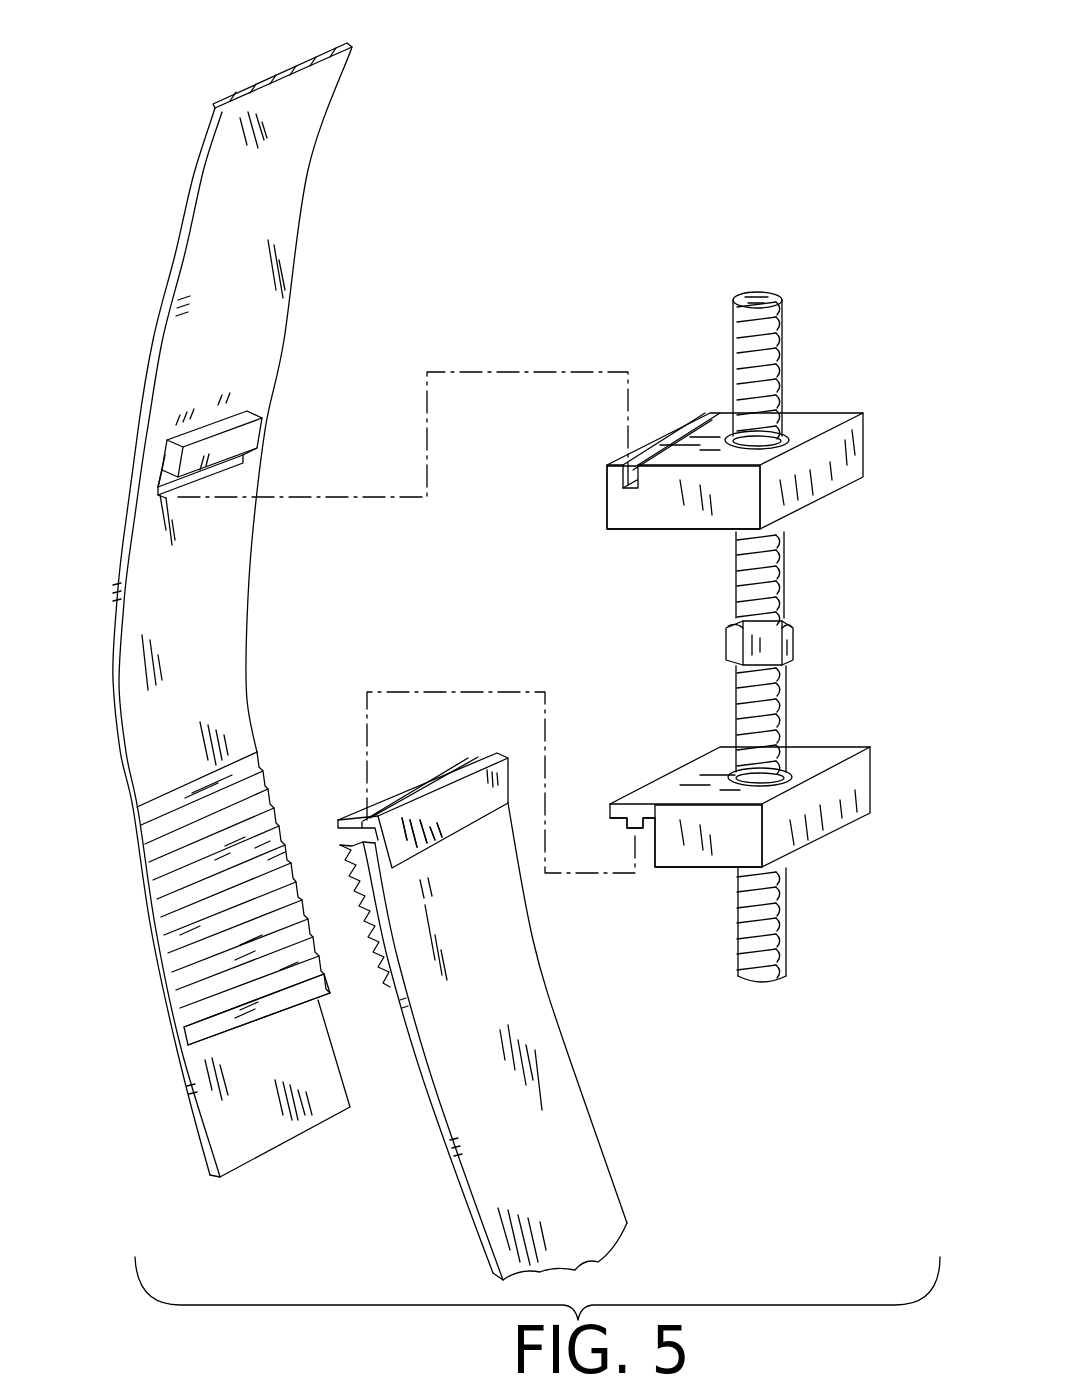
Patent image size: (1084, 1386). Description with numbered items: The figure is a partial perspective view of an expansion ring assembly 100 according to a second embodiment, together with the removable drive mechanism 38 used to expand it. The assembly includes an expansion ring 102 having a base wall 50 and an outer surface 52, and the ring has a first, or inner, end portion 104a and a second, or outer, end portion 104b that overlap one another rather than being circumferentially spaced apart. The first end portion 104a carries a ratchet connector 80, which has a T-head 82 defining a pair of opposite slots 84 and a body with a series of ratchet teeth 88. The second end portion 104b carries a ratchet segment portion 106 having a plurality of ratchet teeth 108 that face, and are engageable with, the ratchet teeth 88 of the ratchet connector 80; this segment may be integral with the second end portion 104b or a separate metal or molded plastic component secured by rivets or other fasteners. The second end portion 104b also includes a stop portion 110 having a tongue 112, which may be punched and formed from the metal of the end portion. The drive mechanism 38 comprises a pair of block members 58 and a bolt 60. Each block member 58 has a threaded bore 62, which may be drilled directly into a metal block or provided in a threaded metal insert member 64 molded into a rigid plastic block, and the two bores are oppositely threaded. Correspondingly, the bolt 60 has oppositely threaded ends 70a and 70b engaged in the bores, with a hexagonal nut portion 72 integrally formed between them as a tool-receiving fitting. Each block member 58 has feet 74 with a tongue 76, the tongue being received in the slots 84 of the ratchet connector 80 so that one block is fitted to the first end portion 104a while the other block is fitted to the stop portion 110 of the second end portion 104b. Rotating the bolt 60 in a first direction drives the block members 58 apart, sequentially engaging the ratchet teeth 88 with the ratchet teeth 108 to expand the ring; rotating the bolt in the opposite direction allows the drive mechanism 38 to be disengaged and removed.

The expansion ring assembly 100 is at (708, 130).
The drive mechanism 38 is at (731, 636).
The base wall 50 is at (252, 612).
The outer surface 52 is at (250, 74).
The block members 58 is at (867, 427).
The bolt 60 is at (775, 636).
The threaded bore 62 is at (900, 478).
The threaded metal insert members 64 is at (787, 433).
The bolt end 70a is at (742, 357).
The bolt end 70b is at (790, 913).
The hexagonal nut portion 72 is at (798, 633).
The feet 74 is at (623, 505).
The tongue 76 is at (622, 468).
The ratchet connector 80 is at (440, 772).
The T-head 82 is at (458, 815).
The slots 84 is at (453, 768).
The ratchet teeth 88 is at (372, 914).
The expansion ring 102 is at (182, 718).
The first end portion 104a is at (550, 1041).
The second end portion 104b is at (252, 612).
The ratchet segment portion 106 is at (192, 917).
The ratchet teeth 108 is at (192, 997).
The stop portion 110 is at (210, 428).
The tongue 112 is at (178, 468).